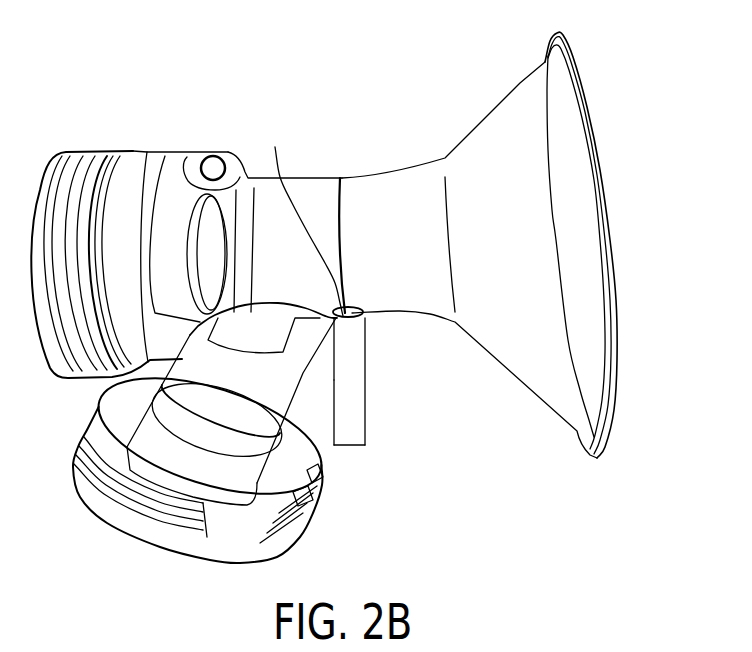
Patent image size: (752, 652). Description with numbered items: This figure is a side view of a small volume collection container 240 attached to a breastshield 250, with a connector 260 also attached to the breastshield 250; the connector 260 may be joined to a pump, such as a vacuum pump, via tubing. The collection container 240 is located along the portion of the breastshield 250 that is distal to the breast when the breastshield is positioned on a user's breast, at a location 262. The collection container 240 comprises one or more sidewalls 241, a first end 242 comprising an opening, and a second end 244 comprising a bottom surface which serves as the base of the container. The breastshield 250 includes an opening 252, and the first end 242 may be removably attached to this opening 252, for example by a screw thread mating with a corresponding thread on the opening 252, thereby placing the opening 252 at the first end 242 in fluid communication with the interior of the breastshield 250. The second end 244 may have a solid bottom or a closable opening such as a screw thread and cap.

The connector 260 is at (135, 212).
The first end 242 is at (302, 216).
The breastshield 250 is at (520, 213).
The sidewalls 241 is at (334, 390).
The second end 244 is at (348, 445).
The small volume collection container 240 is at (345, 375).
The location 262 is at (350, 316).
The opening 252 is at (348, 320).